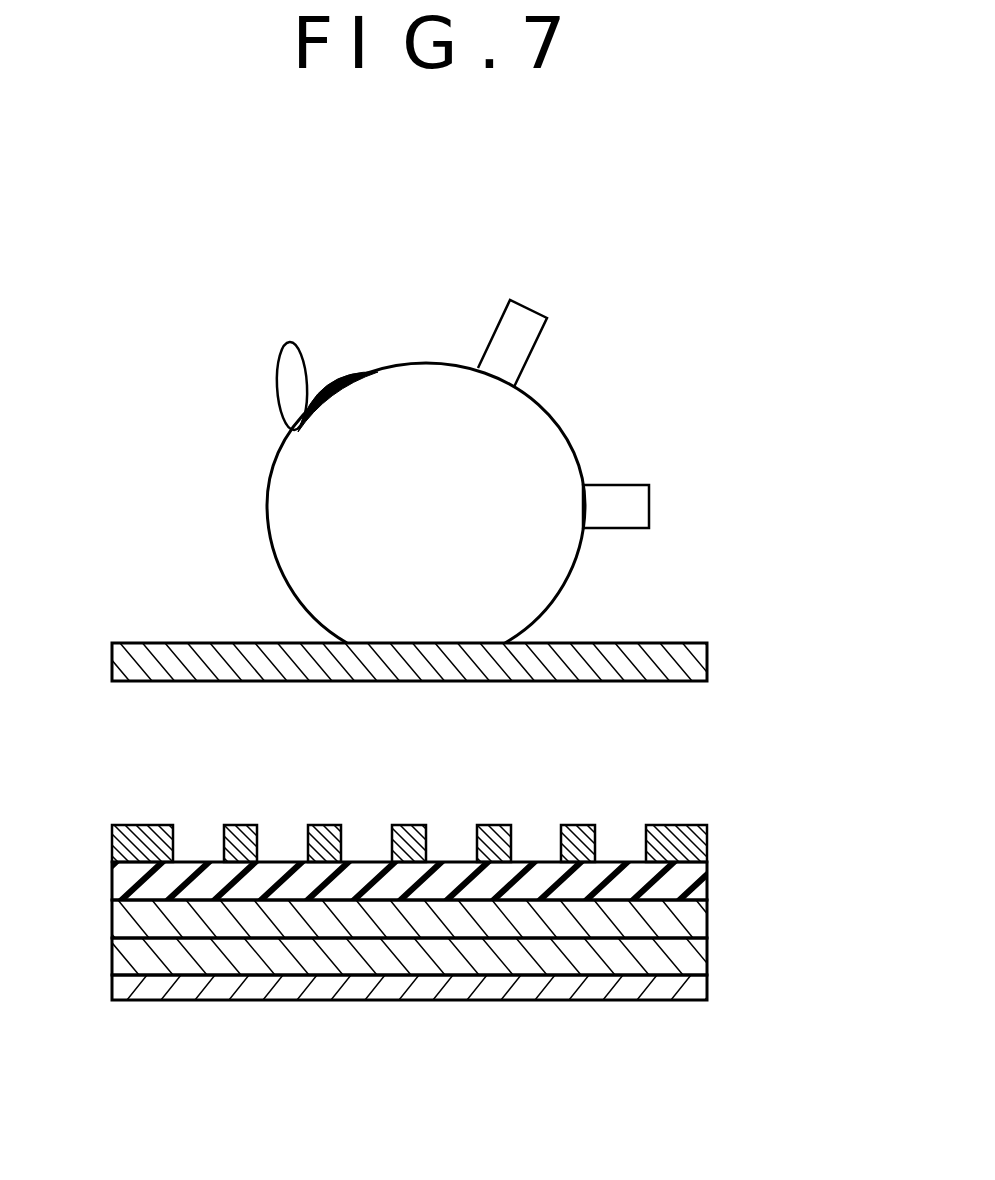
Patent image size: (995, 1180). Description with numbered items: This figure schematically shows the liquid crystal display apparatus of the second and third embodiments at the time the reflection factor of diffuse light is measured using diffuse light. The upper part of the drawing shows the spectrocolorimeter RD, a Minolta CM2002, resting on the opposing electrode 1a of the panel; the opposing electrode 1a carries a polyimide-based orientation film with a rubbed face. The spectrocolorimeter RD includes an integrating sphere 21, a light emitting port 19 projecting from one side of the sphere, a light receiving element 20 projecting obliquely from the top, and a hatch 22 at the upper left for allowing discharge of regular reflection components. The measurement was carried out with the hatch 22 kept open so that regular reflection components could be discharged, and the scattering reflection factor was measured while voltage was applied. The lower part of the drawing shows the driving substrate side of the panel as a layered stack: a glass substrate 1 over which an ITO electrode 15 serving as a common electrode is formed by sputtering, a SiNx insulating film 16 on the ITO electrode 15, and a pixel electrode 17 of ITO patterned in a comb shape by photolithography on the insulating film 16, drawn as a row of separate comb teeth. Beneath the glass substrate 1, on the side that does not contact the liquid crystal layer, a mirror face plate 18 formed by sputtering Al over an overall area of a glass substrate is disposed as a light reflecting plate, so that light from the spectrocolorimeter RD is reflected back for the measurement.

The spectrocolorimeter RD is at (402, 333).
The integrating sphere 21 is at (537, 420).
The light receiving element 20 is at (521, 313).
The light emitting port 19 is at (640, 507).
The hatch 22 is at (287, 368).
The opposing electrode 1a is at (688, 662).
The pixel electrode 17 is at (688, 843).
The insulating film 16 is at (688, 885).
The ITO electrode 15 is at (688, 922).
The glass substrate 1 is at (688, 962).
The mirror face plate 18 is at (128, 992).